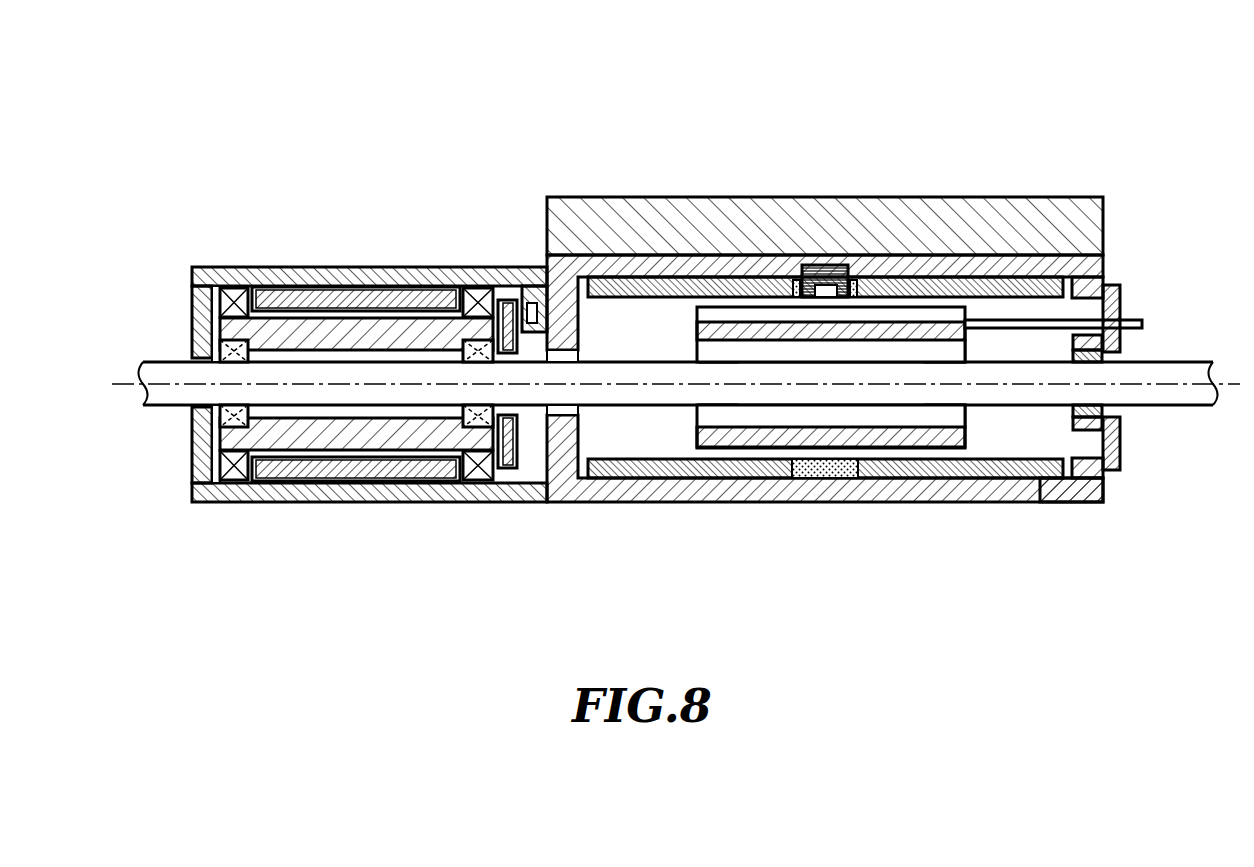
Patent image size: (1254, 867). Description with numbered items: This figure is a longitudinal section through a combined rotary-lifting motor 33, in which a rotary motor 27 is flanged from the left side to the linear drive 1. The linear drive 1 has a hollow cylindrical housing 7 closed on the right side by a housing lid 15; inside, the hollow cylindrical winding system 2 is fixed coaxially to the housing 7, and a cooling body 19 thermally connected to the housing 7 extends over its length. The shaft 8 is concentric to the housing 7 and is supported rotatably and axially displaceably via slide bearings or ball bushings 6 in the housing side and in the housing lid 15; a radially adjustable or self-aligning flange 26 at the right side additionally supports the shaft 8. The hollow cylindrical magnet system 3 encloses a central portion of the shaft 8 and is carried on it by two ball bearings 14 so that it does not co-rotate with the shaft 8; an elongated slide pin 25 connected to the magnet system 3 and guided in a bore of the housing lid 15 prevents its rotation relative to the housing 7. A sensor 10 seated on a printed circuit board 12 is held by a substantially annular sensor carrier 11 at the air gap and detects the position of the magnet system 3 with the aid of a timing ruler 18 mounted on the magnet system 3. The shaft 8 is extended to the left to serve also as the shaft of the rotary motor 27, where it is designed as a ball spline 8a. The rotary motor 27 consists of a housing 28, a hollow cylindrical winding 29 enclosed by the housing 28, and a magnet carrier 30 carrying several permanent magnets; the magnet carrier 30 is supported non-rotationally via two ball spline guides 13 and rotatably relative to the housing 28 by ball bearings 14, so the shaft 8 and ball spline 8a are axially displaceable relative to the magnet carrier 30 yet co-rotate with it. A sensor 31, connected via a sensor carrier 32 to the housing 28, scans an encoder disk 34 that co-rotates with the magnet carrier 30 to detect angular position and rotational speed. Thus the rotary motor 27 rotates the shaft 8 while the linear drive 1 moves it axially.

The linear drive 1 is at (1010, 178).
The winding system 2 is at (650, 468).
The magnet system 3 is at (775, 437).
The slide bearings or ball bushings 6 is at (1105, 355).
The housing 7 is at (1085, 490).
The shaft 8 is at (1183, 392).
The ball spline 8a is at (160, 392).
The sensor 10 is at (826, 288).
The sensor carrier 11 is at (858, 277).
The printed circuit board 12 is at (812, 268).
The ball spline guides 13 is at (222, 348).
The ball bearings 14 is at (234, 298).
The housing lid 15 is at (1112, 457).
The timing ruler 18 is at (758, 315).
The cooling body 19 is at (692, 232).
The slide pin 25 is at (1120, 322).
The flange 26 is at (1112, 288).
The rotary motor 27 is at (200, 250).
The housing 28 is at (200, 293).
The winding 29 is at (280, 473).
The magnet carrier 30 is at (337, 433).
The sensor 31 is at (503, 303).
The sensor carrier 32 is at (537, 292).
The rotary-lifting motor 33 is at (618, 162).
The encoder disk 34 is at (512, 462).